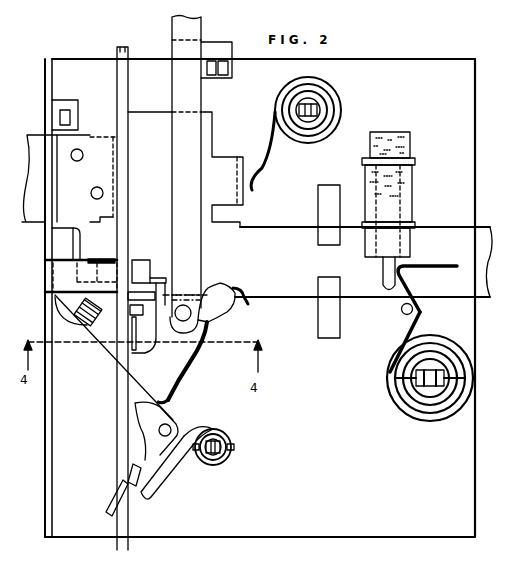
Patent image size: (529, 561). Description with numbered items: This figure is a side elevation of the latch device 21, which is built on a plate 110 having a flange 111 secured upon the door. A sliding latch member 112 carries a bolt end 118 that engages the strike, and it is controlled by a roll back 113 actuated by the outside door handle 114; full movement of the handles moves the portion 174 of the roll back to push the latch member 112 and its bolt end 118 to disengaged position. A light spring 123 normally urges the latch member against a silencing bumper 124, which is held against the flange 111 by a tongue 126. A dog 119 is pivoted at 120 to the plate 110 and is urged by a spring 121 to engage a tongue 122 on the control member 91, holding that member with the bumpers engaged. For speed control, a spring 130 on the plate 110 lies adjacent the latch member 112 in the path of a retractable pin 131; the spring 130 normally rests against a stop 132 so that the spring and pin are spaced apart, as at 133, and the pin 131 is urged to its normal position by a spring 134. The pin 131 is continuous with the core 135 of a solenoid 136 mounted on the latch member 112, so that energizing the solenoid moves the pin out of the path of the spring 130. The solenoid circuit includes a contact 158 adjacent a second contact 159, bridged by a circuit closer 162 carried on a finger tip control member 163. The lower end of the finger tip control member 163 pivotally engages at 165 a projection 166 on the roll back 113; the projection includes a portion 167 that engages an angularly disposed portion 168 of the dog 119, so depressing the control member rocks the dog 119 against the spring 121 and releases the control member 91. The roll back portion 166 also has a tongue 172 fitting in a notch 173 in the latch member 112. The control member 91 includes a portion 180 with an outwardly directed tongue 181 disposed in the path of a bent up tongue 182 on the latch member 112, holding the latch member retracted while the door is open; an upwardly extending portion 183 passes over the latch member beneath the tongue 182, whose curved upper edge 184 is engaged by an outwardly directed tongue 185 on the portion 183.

The latch device 21 is at (478, 157).
The control member 91 is at (124, 47).
The plate 110 is at (456, 72).
The flange 111 is at (47, 72).
The sliding latch member 112 is at (299, 297).
The roll back 113 is at (102, 350).
The outside door handle 114 is at (80, 321).
The bolt end 118 is at (25, 222).
The dog 119 is at (181, 460).
The pivot 120 is at (172, 428).
The spring 121 is at (226, 436).
The tongue 122 is at (128, 479).
The spring 123 is at (268, 145).
The silencing bumper 124 is at (62, 103).
The tongue 126 is at (60, 114).
The spring 130 is at (387, 378).
The retractable pin 131 is at (385, 285).
The stop 132 is at (412, 311).
The space 133 is at (410, 280).
The spring 134 is at (413, 140).
The core 135 is at (413, 186).
The solenoid 136 is at (406, 206).
The contact 158 is at (211, 75).
The second contact 159 is at (230, 66).
The circuit closer 162 is at (221, 48).
The finger tip control member 163 is at (176, 32).
The pivot 165 is at (205, 322).
The projection 166 is at (190, 372).
The portion 167 is at (170, 401).
The angularly disposed portion 168 is at (136, 410).
The tongue 172 is at (228, 308).
The notch 173 is at (252, 298).
The portion 174 is at (75, 232).
The portion 180 is at (156, 343).
The tongue 181 is at (128, 311).
The bent up tongue 182 is at (142, 263).
The upwardly extending portion 183 is at (158, 293).
The curved upper edge 184 is at (103, 257).
The tongue 185 is at (168, 287).